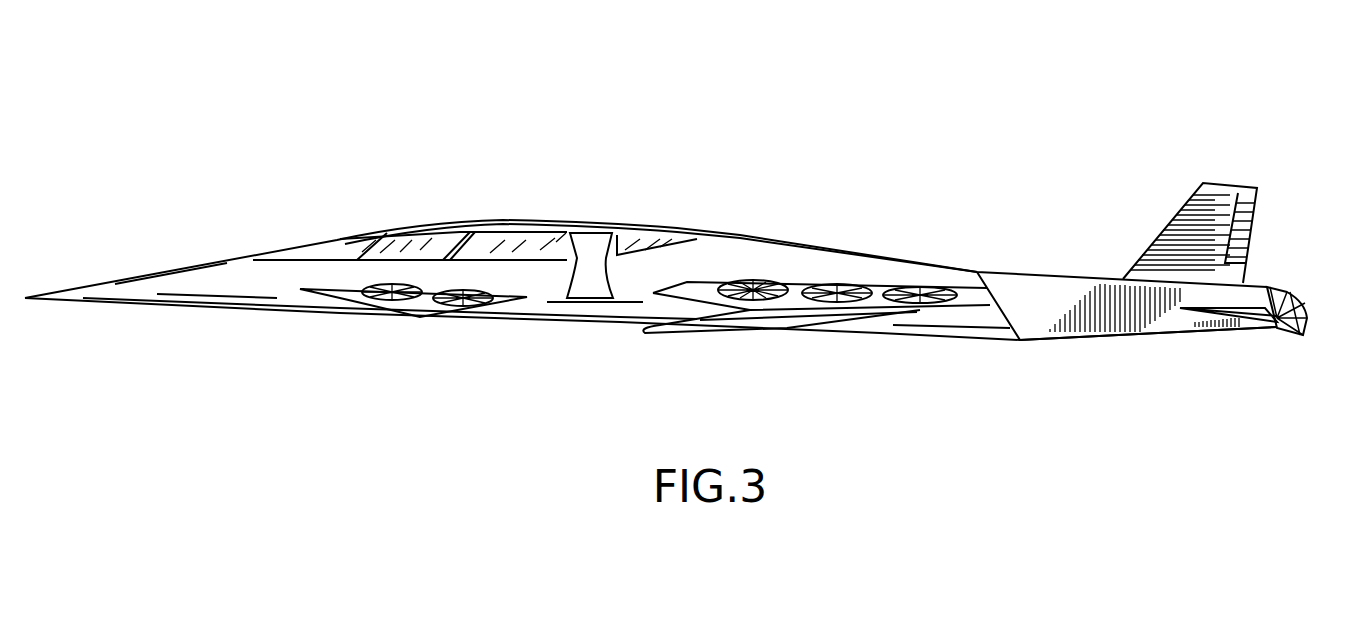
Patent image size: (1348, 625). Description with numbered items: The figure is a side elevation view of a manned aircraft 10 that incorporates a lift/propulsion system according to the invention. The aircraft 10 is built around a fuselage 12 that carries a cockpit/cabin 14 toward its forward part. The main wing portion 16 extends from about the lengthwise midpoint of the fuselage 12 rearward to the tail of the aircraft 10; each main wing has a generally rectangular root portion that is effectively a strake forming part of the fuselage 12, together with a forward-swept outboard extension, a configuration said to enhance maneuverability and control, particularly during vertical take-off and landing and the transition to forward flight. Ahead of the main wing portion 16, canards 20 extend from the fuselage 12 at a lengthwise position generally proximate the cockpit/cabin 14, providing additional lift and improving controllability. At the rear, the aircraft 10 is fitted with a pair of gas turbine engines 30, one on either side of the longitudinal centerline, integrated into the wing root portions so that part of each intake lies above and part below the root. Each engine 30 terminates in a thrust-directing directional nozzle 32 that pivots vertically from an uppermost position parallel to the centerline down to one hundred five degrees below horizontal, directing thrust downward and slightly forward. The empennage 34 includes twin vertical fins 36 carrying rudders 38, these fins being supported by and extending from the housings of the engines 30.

The aircraft 10 is at (684, 228).
The fuselage 12 is at (588, 318).
The cockpit/cabin 14 is at (358, 220).
The main wing portion 16 is at (838, 350).
The canards 20 is at (392, 328).
The gas turbine engines 30 is at (1270, 357).
The thrust-directing directional nozzle 32 is at (1293, 337).
The empennage 34 is at (1233, 216).
The vertical fins 36 is at (1177, 212).
The rudders 38 is at (1266, 228).